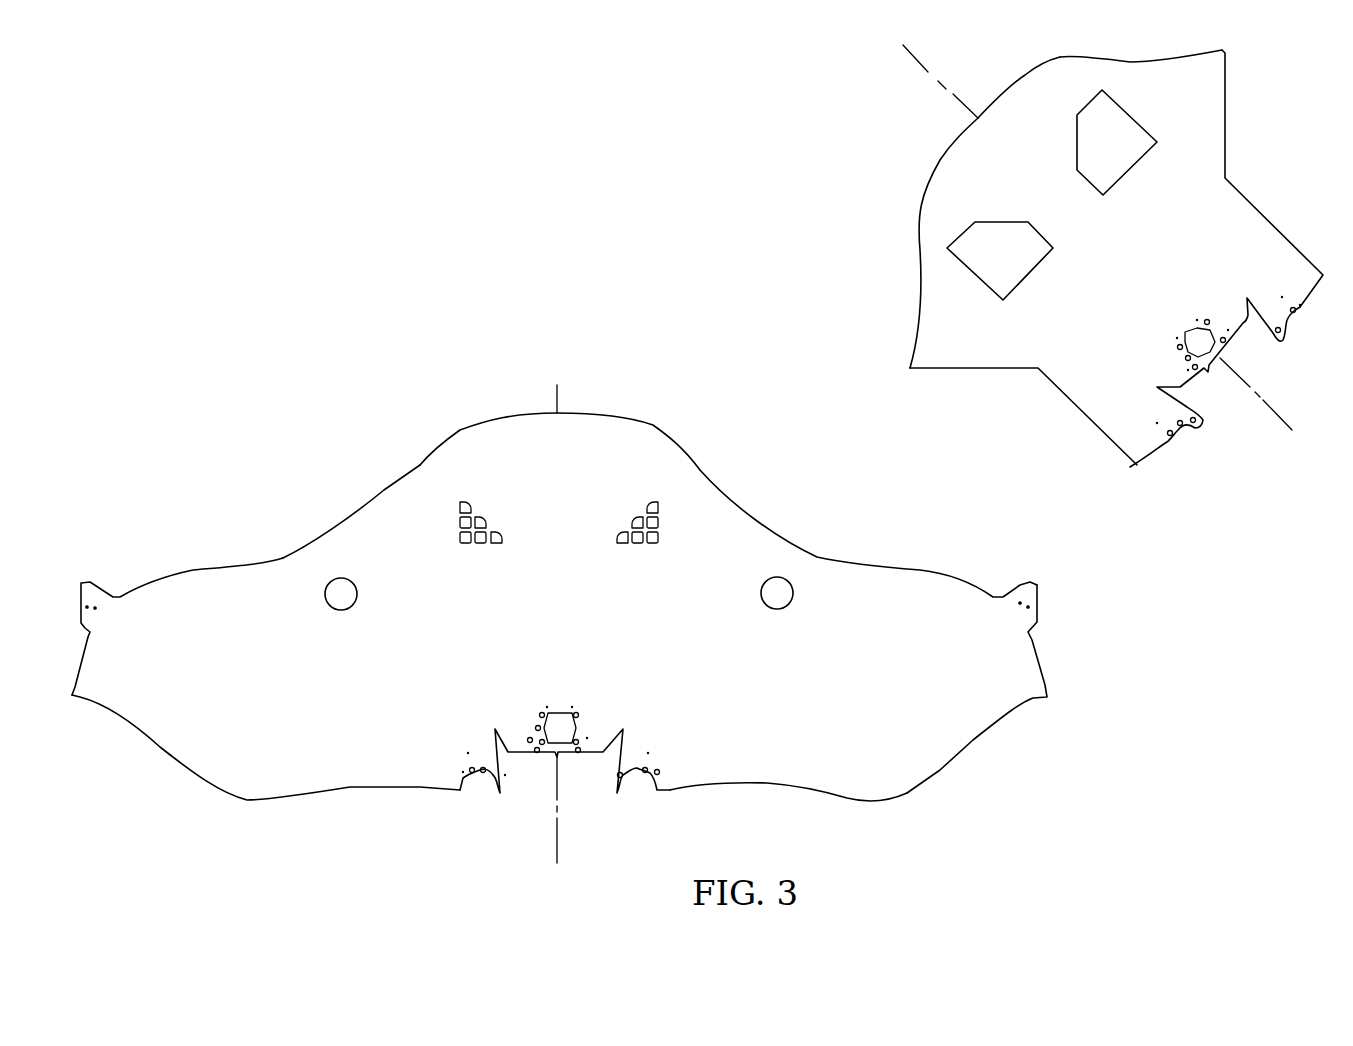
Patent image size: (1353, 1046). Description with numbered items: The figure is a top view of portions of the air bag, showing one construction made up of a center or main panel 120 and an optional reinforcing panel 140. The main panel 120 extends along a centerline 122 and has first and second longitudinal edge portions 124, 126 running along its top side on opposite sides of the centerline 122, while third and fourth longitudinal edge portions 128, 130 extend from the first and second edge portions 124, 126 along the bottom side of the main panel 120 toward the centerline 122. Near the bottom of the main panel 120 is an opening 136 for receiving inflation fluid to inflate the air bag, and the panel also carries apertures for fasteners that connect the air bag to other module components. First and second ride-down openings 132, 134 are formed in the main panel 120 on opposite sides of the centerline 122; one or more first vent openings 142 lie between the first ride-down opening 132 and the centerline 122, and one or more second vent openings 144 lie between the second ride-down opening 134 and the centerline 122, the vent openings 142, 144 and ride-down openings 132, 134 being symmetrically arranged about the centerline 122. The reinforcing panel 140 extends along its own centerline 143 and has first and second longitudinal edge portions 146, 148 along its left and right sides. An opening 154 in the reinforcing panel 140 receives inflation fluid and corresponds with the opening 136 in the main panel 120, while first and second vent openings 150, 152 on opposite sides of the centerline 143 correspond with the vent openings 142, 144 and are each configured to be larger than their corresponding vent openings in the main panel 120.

The main panel 120 is at (579, 624).
The centerline 122 is at (567, 820).
The first longitudinal edge portion 124 is at (287, 549).
The second longitudinal edge portion 126 is at (919, 566).
The third longitudinal edge portion 128 is at (339, 790).
The fourth longitudinal edge portion 130 is at (793, 788).
The first ride-down opening 132 is at (340, 625).
The second ride-down opening 134 is at (778, 625).
The opening 136 is at (525, 792).
The reinforcing panel 140 is at (1095, 241).
The first vent openings 142 is at (440, 488).
The centerline 143 is at (932, 78).
The second vent openings 144 is at (590, 568).
The first longitudinal edge portion 146 is at (913, 212).
The second longitudinal edge portion 148 is at (1145, 57).
The first vent opening 150 is at (1000, 206).
The second vent opening 152 is at (1150, 100).
The opening 154 is at (1278, 368).